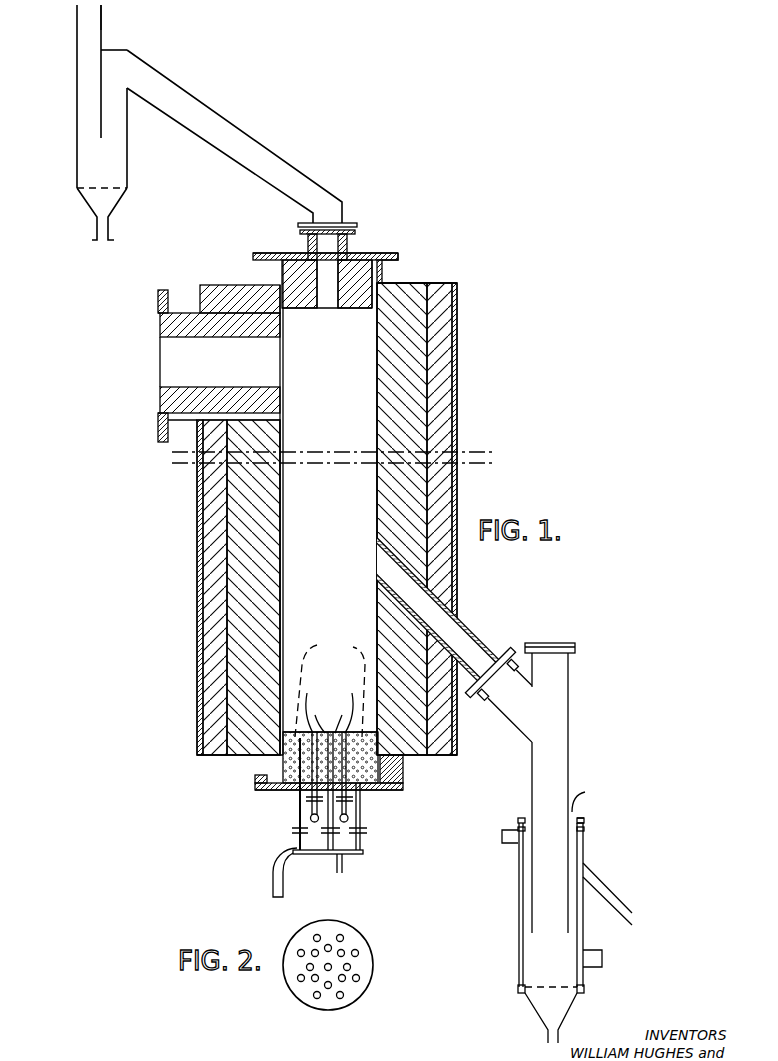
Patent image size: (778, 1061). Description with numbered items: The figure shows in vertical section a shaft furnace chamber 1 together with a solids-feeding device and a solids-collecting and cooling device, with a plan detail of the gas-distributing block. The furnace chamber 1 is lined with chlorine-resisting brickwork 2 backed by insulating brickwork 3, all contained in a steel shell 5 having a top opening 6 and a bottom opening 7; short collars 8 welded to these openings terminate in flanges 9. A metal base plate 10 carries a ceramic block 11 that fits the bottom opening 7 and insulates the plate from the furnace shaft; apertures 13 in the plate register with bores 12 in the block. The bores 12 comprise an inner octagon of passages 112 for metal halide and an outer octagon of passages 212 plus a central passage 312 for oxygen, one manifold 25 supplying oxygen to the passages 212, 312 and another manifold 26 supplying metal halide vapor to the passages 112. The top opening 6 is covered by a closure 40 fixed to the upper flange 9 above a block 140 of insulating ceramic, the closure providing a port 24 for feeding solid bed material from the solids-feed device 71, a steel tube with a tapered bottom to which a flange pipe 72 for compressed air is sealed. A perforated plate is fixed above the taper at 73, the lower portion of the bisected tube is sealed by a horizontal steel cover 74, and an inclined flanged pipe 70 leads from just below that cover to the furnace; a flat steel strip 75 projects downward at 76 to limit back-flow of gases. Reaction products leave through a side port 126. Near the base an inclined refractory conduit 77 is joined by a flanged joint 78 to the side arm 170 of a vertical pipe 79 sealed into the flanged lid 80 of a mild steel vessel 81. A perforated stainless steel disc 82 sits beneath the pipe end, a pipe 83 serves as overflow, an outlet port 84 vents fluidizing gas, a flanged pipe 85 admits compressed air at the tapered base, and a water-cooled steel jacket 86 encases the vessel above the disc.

In FIG. 1, the furnace chamber 1 is at (466, 361).
In FIG. 1, the chlorine-resisting brickwork 2 is at (412, 493).
In FIG. 1, the insulating brickwork 3 is at (446, 557).
In FIG. 1, the steel shell 5 is at (458, 410).
In FIG. 1, the top opening 6 is at (347, 318).
In FIG. 1, the bottom opening 7 is at (287, 703).
In FIG. 1, the short collar 8 is at (383, 272).
In FIG. 1, the flange 9 is at (396, 262).
In FIG. 1, the metal base plate 10 is at (390, 795).
In FIG. 1, the ceramic block 11 is at (288, 760).
In FIG. 2, the ceramic block 11 is at (296, 990).
In FIG. 1, the bores 12 is at (383, 757).
In FIG. 1, the apertures 13 is at (350, 787).
In FIG. 1, the port 24 is at (332, 243).
In FIG. 1, the manifold 25 is at (316, 853).
In FIG. 1, the manifold 26 is at (333, 820).
In FIG. 1, the closure 40 is at (393, 254).
In FIG. 1, the inclined flanged pipe 70 is at (160, 87).
In FIG. 1, the solids-feed device 71 is at (76, 75).
In FIG. 1, the flange pipe 72 is at (110, 232).
In FIG. 1, the perforated plate location 73 is at (112, 194).
In FIG. 1, the horizontal steel cover 74 is at (128, 50).
In FIG. 1, the flat steel strip 75 is at (103, 27).
In FIG. 1, the projection 76 is at (103, 128).
In FIG. 1, the conduit 77 is at (447, 631).
In FIG. 1, the flanged joint 78 is at (513, 652).
In FIG. 1, the vertical pipe 79 is at (569, 720).
In FIG. 1, the flanged lid 80 is at (584, 822).
In FIG. 1, the mild steel vessel 81 is at (594, 808).
In FIG. 1, the stainless steel disc 82 is at (533, 995).
In FIG. 1, the pipe 83 is at (607, 893).
In FIG. 1, the outlet port 84 is at (584, 790).
In FIG. 1, the flanged pipe 85 is at (546, 1040).
In FIG. 1, the steel jacket 86 is at (517, 912).
In FIG. 1, the passages 112 is at (334, 746).
In FIG. 2, the passages 112 is at (345, 979).
In FIG. 1, the port 126 is at (175, 362).
In FIG. 1, the block of insulating ceramic material 140 is at (288, 270).
In FIG. 1, the side arm 170 is at (506, 710).
In FIG. 1, the passages 212 is at (330, 688).
In FIG. 2, the passages 212 is at (343, 937).
In FIG. 1, the passage 312 is at (335, 772).
In FIG. 2, the passage 312 is at (331, 968).